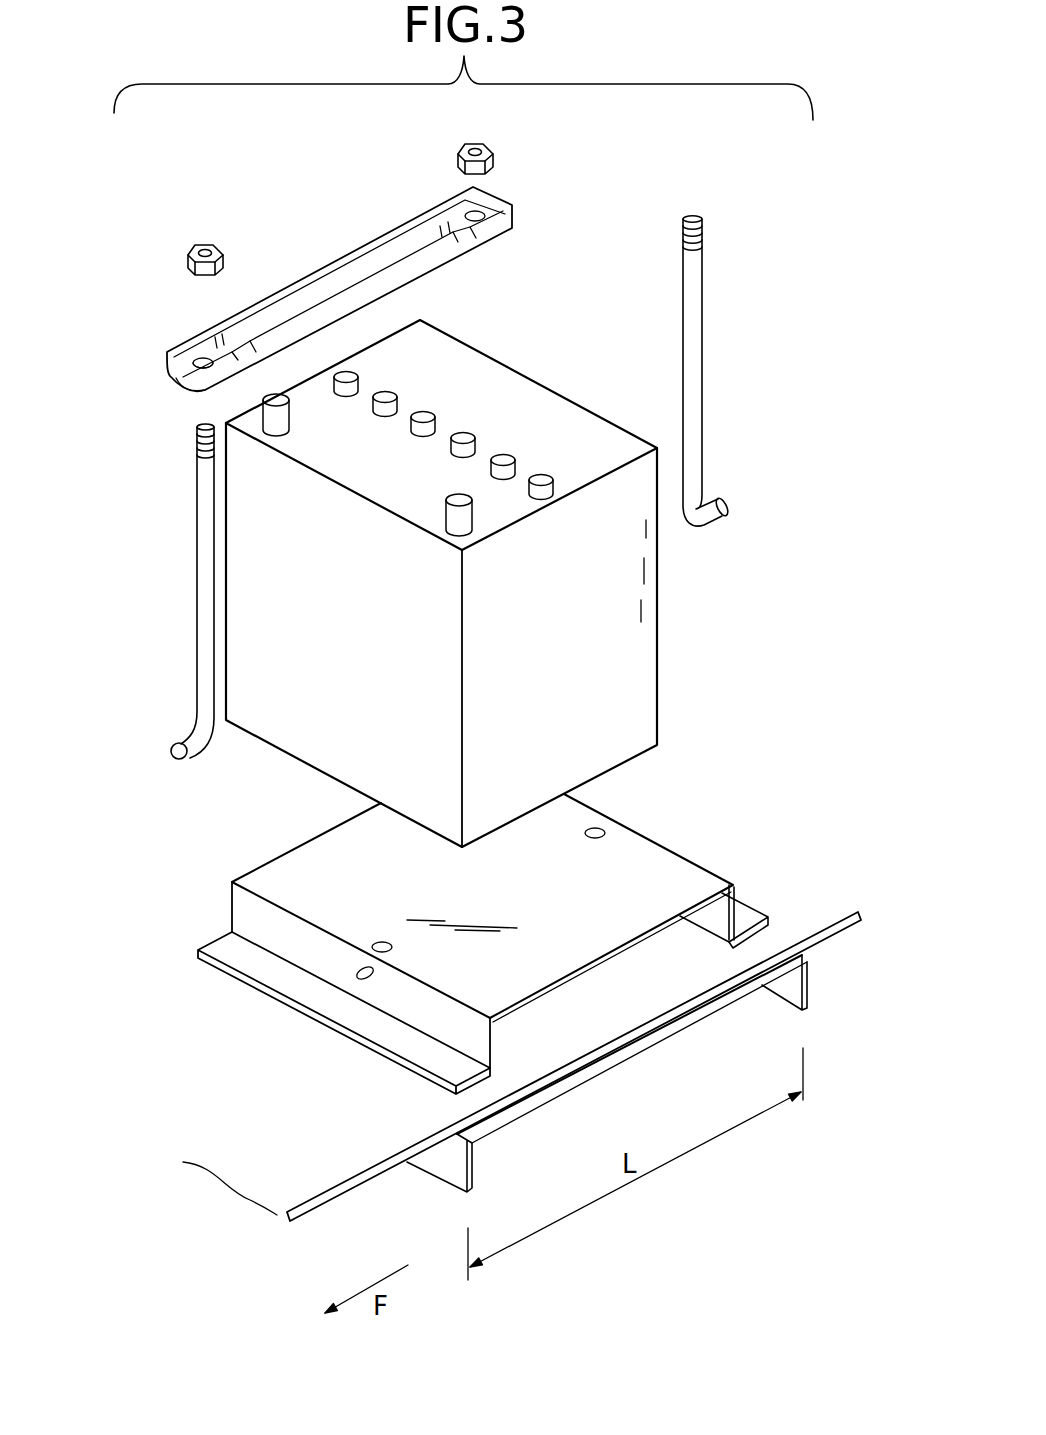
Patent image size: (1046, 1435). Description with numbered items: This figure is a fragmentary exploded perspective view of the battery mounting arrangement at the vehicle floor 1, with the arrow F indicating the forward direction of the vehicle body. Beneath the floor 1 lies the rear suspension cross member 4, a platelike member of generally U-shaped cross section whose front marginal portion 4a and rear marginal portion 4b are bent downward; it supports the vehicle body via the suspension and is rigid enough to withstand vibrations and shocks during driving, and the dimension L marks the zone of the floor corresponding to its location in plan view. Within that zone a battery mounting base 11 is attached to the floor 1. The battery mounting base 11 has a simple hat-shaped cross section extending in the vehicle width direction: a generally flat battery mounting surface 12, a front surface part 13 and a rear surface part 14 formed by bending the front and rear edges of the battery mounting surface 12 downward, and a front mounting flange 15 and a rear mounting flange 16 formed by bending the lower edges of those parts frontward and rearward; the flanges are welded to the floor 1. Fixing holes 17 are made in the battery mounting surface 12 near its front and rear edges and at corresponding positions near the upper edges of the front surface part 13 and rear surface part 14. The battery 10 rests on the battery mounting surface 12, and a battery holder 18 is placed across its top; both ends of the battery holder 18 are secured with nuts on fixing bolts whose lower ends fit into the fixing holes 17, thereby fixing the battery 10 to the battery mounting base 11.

The floor 1 is at (240, 1172).
The rear suspension cross member 4 is at (635, 1105).
The front marginal portion 4a is at (440, 1170).
The rear marginal portion 4b is at (793, 987).
The battery 10 is at (695, 631).
The battery mounting base 11 is at (486, 930).
The battery mounting surface 12 is at (303, 855).
The front surface part 13 is at (240, 910).
The rear surface part 14 is at (722, 913).
The front mounting flange 15 is at (257, 970).
The rear mounting flange 16 is at (753, 915).
The fixing holes 17 is at (603, 827).
The battery holder 18 is at (334, 244).